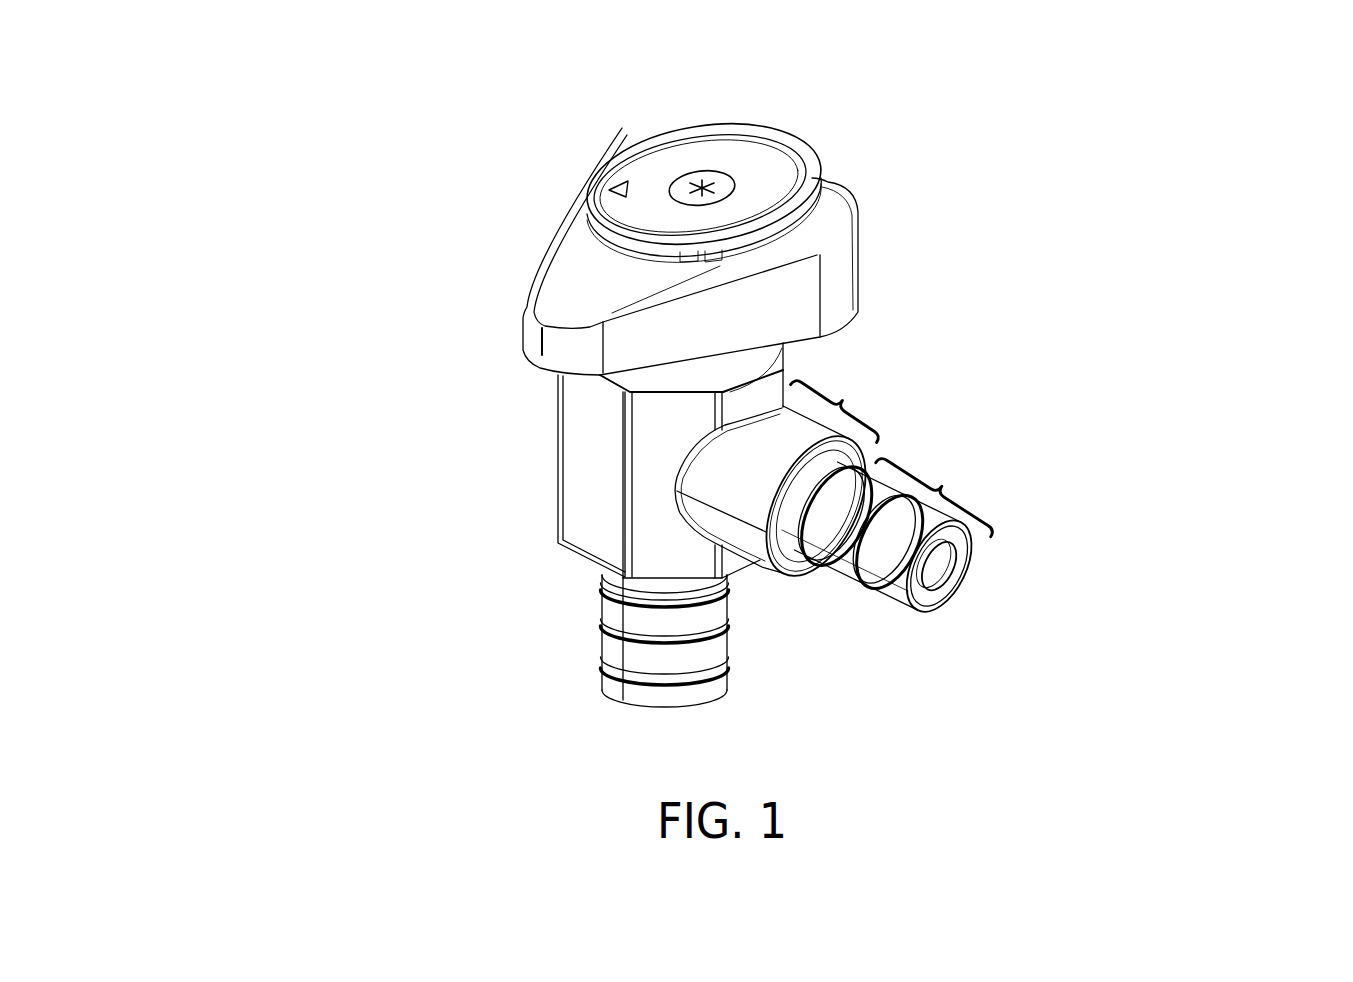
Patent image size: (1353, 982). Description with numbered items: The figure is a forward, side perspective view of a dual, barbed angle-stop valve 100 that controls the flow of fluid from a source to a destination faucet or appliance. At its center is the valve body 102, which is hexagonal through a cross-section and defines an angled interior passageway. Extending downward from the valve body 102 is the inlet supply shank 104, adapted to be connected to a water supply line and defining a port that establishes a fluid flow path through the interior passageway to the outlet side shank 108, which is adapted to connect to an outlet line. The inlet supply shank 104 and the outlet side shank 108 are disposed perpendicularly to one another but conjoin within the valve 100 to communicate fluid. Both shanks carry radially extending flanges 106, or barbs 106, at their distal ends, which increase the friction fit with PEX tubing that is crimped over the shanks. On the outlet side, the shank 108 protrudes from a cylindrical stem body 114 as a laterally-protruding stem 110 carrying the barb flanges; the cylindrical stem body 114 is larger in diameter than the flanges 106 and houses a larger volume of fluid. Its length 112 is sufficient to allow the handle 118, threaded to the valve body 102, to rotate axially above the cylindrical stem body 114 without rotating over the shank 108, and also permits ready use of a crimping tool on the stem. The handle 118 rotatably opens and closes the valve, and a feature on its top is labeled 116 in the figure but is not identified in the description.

The angle-stop valve 100 is at (176, 134).
The valve body 102 is at (598, 455).
The inlet supply shank 104 is at (612, 604).
The flanges (barbs) 106 is at (827, 548).
The outlet side shank 108 is at (877, 550).
The laterally-protruding stem 110 is at (943, 480).
The length 112 is at (845, 397).
The cylindrical stem body 114 is at (783, 433).
The handle top indicia face 116 is at (747, 213).
The handle 118 is at (578, 287).